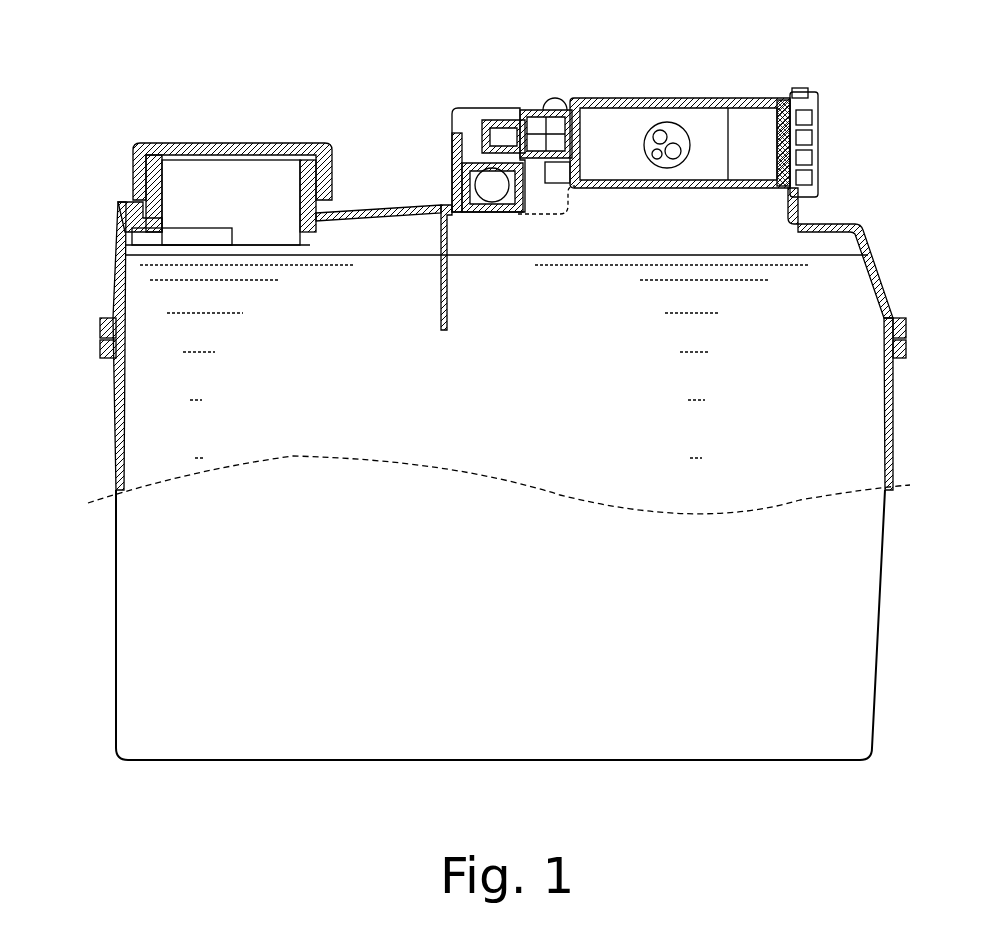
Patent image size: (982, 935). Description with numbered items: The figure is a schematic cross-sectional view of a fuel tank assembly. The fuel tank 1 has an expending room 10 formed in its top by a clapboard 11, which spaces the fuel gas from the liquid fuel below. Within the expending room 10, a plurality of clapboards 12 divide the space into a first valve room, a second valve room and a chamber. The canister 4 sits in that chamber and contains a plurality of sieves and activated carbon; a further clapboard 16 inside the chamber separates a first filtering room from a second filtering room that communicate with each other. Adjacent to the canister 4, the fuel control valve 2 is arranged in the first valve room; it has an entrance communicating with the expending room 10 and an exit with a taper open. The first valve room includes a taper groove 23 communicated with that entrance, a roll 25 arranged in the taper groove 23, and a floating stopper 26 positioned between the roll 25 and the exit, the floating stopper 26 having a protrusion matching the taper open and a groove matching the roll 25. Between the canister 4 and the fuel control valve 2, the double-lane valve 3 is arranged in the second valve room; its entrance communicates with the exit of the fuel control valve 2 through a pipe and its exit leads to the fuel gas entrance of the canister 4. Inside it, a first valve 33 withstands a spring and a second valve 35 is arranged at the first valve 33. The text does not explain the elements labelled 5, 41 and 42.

The fuel tank 1 is at (92, 283).
The fuel control valve 2 is at (450, 147).
The double-lane valve 3 is at (553, 100).
The canister 4 is at (712, 98).
The container wall 5 is at (870, 410).
The expending room 10 is at (805, 222).
The clapboard 11 is at (440, 290).
The clapboard 12 is at (555, 220).
The clapboard 16 is at (738, 128).
The taper groove 23 is at (462, 200).
The roll 25 is at (465, 185).
The floating stopper 26 is at (472, 135).
The first valve 33 is at (545, 110).
The second valve 35 is at (508, 130).
The housing chamber 41 is at (598, 112).
The filter 42 is at (668, 124).